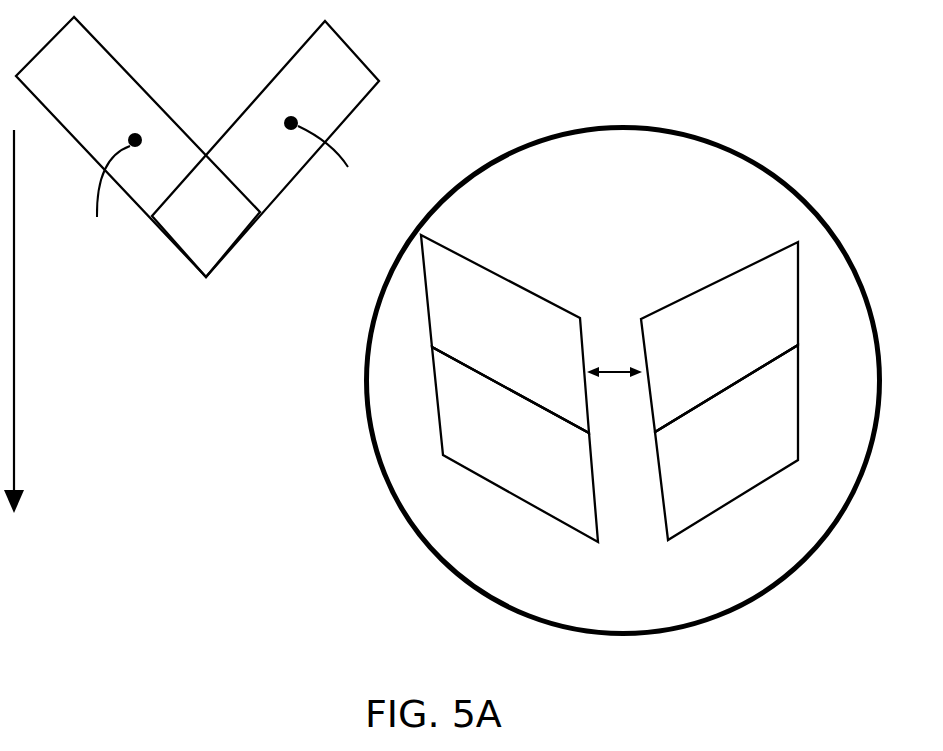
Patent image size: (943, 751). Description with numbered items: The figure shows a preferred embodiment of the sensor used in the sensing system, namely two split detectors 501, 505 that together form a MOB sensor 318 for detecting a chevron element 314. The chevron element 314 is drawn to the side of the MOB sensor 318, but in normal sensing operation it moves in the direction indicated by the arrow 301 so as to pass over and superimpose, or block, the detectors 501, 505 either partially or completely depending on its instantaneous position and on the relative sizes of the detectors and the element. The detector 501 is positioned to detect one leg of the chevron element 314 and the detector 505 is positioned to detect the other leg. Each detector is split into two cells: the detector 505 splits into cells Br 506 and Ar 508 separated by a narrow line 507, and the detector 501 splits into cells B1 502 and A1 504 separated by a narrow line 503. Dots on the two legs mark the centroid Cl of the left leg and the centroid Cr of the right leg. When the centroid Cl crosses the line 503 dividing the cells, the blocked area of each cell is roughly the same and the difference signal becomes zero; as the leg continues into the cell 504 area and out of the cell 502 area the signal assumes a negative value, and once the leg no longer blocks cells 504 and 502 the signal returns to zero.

The chevron element 314 is at (363, 60).
The centroid of left leg Cl is at (112, 193).
The centroid of right leg Cr is at (329, 156).
The arrow 301 is at (14, 358).
The MOB sensor 318 is at (732, 152).
The split detector 501 is at (485, 383).
The cell B1 502 is at (468, 306).
The narrow line 503 is at (443, 355).
The cell A1 504 is at (483, 422).
The split detector 505 is at (747, 382).
The cell Br 506 is at (757, 296).
The narrow line 507 is at (753, 374).
The cell Ar 508 is at (755, 440).